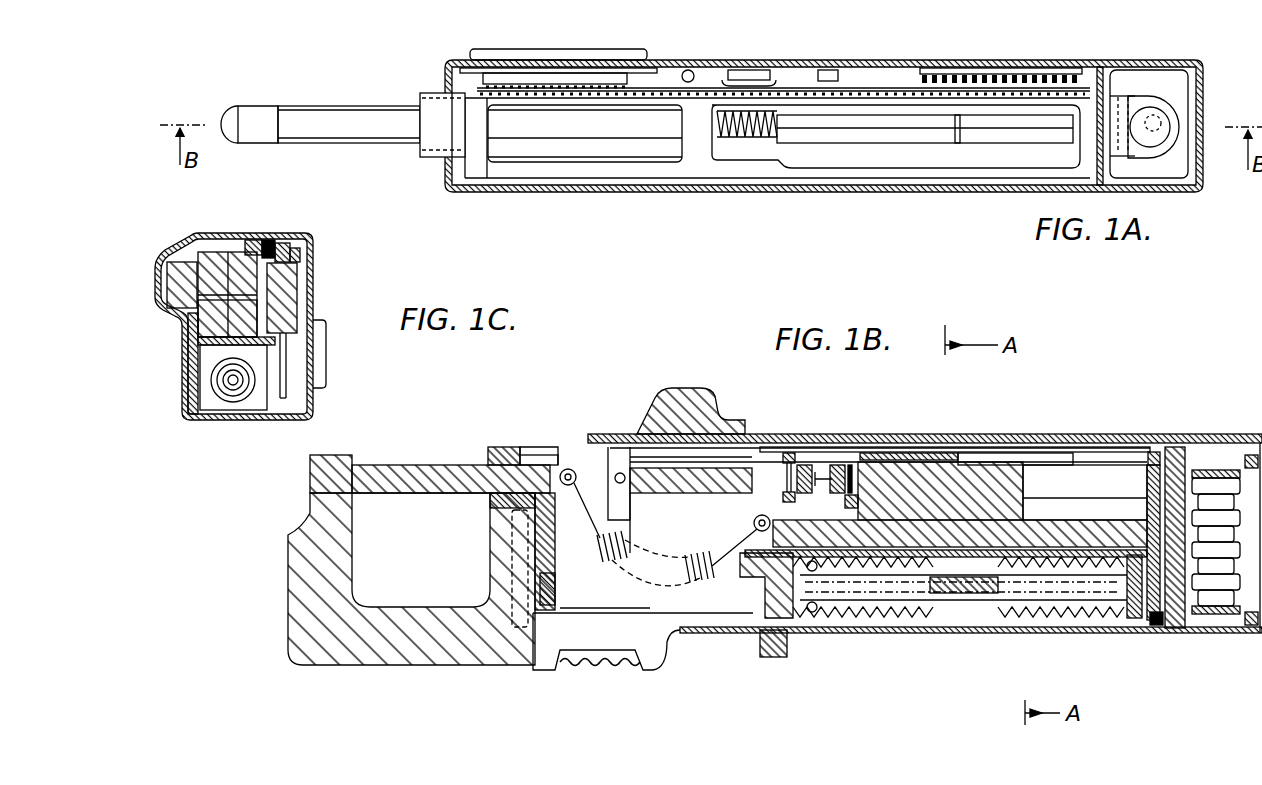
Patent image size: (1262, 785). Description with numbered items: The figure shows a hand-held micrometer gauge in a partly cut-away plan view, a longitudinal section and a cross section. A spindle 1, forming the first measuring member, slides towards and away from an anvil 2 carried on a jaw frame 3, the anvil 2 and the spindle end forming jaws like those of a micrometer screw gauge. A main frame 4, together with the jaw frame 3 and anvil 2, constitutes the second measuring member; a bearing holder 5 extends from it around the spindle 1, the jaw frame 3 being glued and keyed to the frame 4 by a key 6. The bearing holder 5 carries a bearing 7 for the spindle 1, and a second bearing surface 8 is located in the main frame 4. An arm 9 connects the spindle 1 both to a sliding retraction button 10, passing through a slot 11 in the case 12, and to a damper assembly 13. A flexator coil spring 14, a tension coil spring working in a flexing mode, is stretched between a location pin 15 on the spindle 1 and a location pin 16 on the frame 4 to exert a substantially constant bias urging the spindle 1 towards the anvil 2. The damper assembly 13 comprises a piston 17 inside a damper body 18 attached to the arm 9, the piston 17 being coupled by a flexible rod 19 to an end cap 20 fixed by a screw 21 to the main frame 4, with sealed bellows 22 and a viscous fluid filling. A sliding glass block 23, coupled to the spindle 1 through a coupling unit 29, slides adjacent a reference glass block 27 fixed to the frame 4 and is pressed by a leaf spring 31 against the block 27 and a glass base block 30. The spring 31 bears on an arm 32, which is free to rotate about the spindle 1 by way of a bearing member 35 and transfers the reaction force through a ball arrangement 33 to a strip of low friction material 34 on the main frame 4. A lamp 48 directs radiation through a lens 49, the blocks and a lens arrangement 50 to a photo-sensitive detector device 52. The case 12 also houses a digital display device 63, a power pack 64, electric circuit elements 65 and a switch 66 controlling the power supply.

In FIG. 1A, the spindle 1 is at (355, 113).
In FIG. 1B, the spindle 1 is at (413, 480).
In FIG. 1A, the anvil 2 is at (283, 126).
In FIG. 1B, the anvil 2 is at (340, 470).
In FIG. 1B, the jaw frame 3 is at (383, 643).
In FIG. 1A, the main frame 4 is at (512, 170).
In FIG. 1B, the main frame 4 is at (1153, 475).
In FIG. 1B, the bearing holder 5 is at (505, 460).
In FIG. 1B, the key 6 is at (533, 470).
In FIG. 1B, the bearing 7 is at (492, 460).
In FIG. 1B, the second bearing surface 8 is at (764, 468).
In FIG. 1B, the arm 9 is at (618, 460).
In FIG. 1B, the sliding retraction button 10 is at (693, 408).
In FIG. 1B, the slot 11 is at (880, 433).
In FIG. 1B, the case 12 is at (1072, 436).
In FIG. 1B, the damper assembly 13 is at (857, 610).
In FIG. 1B, the flexator coil spring 14 is at (627, 528).
In FIG. 1B, the location pin 15 is at (574, 474).
In FIG. 1B, the location pin 16 is at (763, 537).
In FIG. 1B, the piston 17 is at (995, 580).
In FIG. 1B, the damper body 18 is at (900, 625).
In FIG. 1B, the flexible rod 19 is at (1093, 600).
In FIG. 1B, the end cap 20 is at (1133, 618).
In FIG. 1B, the screw 21 is at (1157, 613).
In FIG. 1B, the sealed bellows 22 is at (1021, 612).
In FIG. 1A, the sliding glass block 23 is at (825, 137).
In FIG. 1C, the sliding glass block 23 is at (190, 313).
In FIG. 1B, the sliding glass block 23 is at (1013, 510).
In FIG. 1A, the reference glass block 27 is at (903, 163).
In FIG. 1C, the reference glass block 27 is at (218, 263).
In FIG. 1B, the coupling unit 29 is at (830, 478).
In FIG. 1A, the glass base block 30 is at (1018, 135).
In FIG. 1C, the glass base block 30 is at (230, 353).
In FIG. 1B, the glass base block 30 is at (980, 537).
In FIG. 1C, the leaf spring 31 is at (268, 237).
In FIG. 1C, the arm 32 is at (280, 243).
In FIG. 1B, the arm 32 is at (935, 455).
In FIG. 1C, the ball arrangement 33 is at (300, 248).
In FIG. 1C, the strip of low friction material 34 is at (317, 255).
In FIG. 1B, the strip of low friction material 34 is at (998, 455).
In FIG. 1B, the bearing member 35 is at (826, 462).
In FIG. 1C, the lamp 48 is at (297, 332).
In FIG. 1C, the lens 49 is at (260, 280).
In FIG. 1C, the lens arrangement 50 is at (190, 295).
In FIG. 1C, the photo-sensitive detector device 52 is at (170, 273).
In FIG. 1A, the digital display device 63 is at (571, 72).
In FIG. 1B, the power pack 64 is at (1235, 525).
In FIG. 1A, the electric circuit elements 65 is at (930, 69).
In FIG. 1B, the switch 66 is at (570, 660).